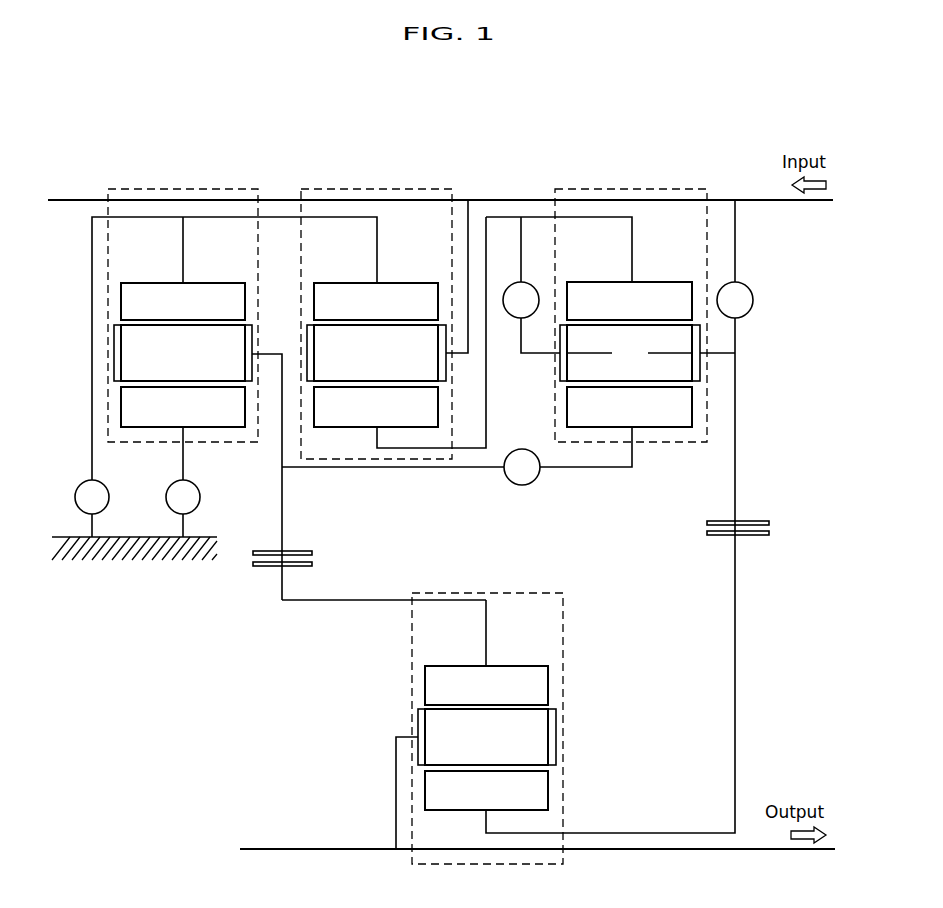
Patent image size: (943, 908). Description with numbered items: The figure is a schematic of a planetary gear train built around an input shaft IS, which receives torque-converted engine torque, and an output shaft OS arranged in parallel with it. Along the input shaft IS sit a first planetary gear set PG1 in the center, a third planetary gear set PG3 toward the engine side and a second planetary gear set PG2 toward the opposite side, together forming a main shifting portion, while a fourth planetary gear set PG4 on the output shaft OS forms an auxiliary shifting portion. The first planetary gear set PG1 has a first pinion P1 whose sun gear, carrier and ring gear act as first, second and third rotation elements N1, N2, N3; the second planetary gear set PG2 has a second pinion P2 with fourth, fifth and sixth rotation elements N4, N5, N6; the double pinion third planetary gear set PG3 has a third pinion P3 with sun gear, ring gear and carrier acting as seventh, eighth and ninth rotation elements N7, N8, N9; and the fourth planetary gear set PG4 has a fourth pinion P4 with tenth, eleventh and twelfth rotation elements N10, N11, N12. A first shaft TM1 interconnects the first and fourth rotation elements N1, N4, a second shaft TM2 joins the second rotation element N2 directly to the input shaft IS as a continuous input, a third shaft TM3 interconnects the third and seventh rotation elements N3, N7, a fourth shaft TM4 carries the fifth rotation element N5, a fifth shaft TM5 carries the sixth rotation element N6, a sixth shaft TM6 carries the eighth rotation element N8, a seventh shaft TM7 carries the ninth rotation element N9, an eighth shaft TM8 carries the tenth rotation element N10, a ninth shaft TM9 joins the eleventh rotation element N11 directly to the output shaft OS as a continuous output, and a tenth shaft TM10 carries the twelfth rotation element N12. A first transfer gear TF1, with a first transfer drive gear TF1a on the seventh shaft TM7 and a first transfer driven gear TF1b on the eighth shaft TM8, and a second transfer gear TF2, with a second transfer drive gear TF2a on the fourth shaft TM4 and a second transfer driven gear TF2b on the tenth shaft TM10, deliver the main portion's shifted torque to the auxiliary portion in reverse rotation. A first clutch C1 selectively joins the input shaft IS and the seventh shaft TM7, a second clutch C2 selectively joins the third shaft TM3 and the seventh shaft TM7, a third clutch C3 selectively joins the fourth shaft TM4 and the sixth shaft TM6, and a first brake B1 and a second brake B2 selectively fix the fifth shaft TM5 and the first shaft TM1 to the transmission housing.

The input shaft IS is at (798, 201).
The output shaft OS is at (787, 850).
The first planetary gear set PG1 is at (416, 185).
The second planetary gear set PG2 is at (150, 183).
The third planetary gear set PG3 is at (672, 185).
The fourth planetary gear set PG4 is at (567, 645).
The first rotation element N1 is at (376, 301).
The second rotation element N2 is at (307, 322).
The third rotation element N3 is at (376, 407).
The fourth rotation element N4 is at (183, 301).
The fifth rotation element N5 is at (113, 322).
The sixth rotation element N6 is at (183, 407).
The seventh rotation element N7 is at (629, 301).
The eighth rotation element N8 is at (629, 407).
The ninth rotation element N9 is at (563, 322).
The tenth rotation element N10 is at (486, 790).
The eleventh rotation element N11 is at (415, 707).
The twelfth rotation element N12 is at (486, 685).
The first pinion P1 is at (376, 353).
The second pinion P2 is at (183, 353).
The third pinion P3 is at (629, 353).
The fourth pinion P4 is at (486, 737).
The first shaft TM1 is at (225, 211).
The second shaft TM2 is at (474, 209).
The third shaft TM3 is at (472, 458).
The fourth shaft TM4 is at (404, 470).
The fifth shaft TM5 is at (193, 456).
The sixth shaft TM6 is at (645, 453).
The seventh shaft TM7 is at (741, 408).
The eighth shaft TM8 is at (741, 718).
The ninth shaft TM9 is at (384, 776).
The tenth shaft TM10 is at (328, 606).
The first clutch C1 is at (735, 259).
The second clutch C2 is at (531, 285).
The third clutch C3 is at (522, 467).
The first brake B1 is at (183, 508).
The second brake B2 is at (92, 508).
The first transfer gear TF1 is at (689, 529).
The first transfer drive gear TF1a is at (707, 523).
The first transfer driven gear TF1b is at (707, 533).
The second transfer gear TF2 is at (334, 569).
The second transfer drive gear TF2a is at (312, 553).
The second transfer driven gear TF2b is at (312, 564).